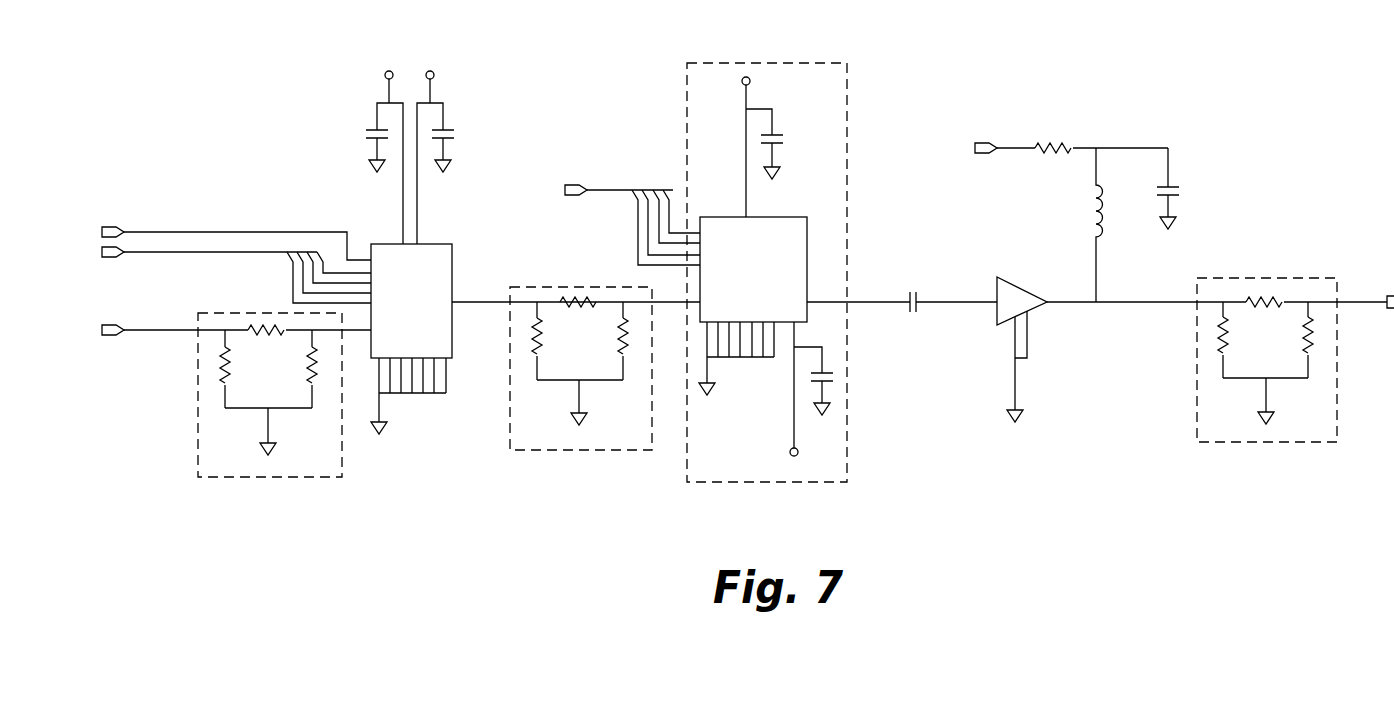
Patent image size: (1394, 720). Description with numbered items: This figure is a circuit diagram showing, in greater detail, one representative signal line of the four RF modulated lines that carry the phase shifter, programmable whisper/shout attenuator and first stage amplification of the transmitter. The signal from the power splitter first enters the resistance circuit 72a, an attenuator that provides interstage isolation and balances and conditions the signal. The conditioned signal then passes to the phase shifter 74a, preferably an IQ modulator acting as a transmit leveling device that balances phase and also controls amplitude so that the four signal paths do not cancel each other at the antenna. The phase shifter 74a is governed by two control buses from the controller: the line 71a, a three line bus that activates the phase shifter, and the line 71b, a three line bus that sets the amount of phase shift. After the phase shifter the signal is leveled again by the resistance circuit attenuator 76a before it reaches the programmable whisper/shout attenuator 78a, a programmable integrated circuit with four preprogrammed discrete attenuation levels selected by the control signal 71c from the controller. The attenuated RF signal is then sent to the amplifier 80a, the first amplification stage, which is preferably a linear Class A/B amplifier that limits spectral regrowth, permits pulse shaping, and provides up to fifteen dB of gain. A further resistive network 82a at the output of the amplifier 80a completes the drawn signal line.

The control signal line 71a is at (178, 231).
The control signal line 71b is at (242, 252).
The control signal 71c is at (617, 190).
The resistance circuit 72a is at (226, 313).
The phase shifter 74a is at (443, 244).
The resistance circuit attenuator 76a is at (542, 287).
The programmable whisper/shout attenuator 78a is at (812, 63).
The amplifier 80a is at (997, 320).
The output attenuator pad 82a is at (1305, 278).